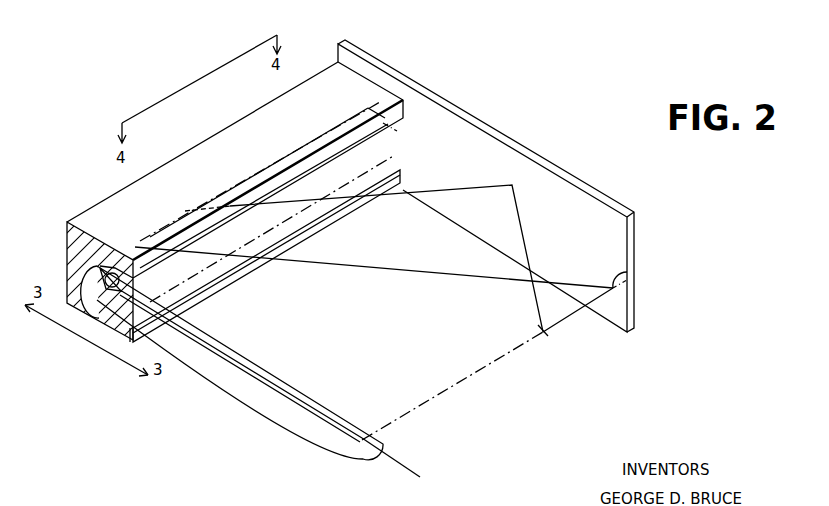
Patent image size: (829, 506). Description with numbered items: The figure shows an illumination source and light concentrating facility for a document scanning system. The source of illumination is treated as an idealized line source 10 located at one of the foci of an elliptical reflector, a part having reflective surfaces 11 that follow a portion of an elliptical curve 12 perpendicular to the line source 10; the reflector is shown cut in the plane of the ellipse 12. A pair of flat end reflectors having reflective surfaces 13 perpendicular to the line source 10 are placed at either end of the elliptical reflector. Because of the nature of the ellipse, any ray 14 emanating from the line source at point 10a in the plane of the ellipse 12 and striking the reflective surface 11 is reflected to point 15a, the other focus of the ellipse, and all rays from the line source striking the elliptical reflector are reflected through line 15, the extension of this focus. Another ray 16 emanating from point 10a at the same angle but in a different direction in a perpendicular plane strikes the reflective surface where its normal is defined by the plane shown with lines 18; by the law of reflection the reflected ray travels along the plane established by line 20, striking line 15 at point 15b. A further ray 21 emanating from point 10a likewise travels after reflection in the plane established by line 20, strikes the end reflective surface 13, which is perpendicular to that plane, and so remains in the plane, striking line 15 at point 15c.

The line source 10 is at (116, 290).
The point on line source 10a is at (95, 312).
The reflective surfaces 11 is at (232, 265).
The elliptical curve 12 is at (315, 372).
The end reflective surfaces 13 is at (498, 137).
The ray 14 is at (100, 271).
The line 15 is at (498, 352).
The other focus point 15a is at (360, 455).
The point on line 15b is at (627, 275).
The point on line 15c is at (545, 332).
The ray 16 is at (140, 276).
The lines 18 is at (282, 162).
The line 20 is at (225, 357).
The ray 21 is at (180, 216).